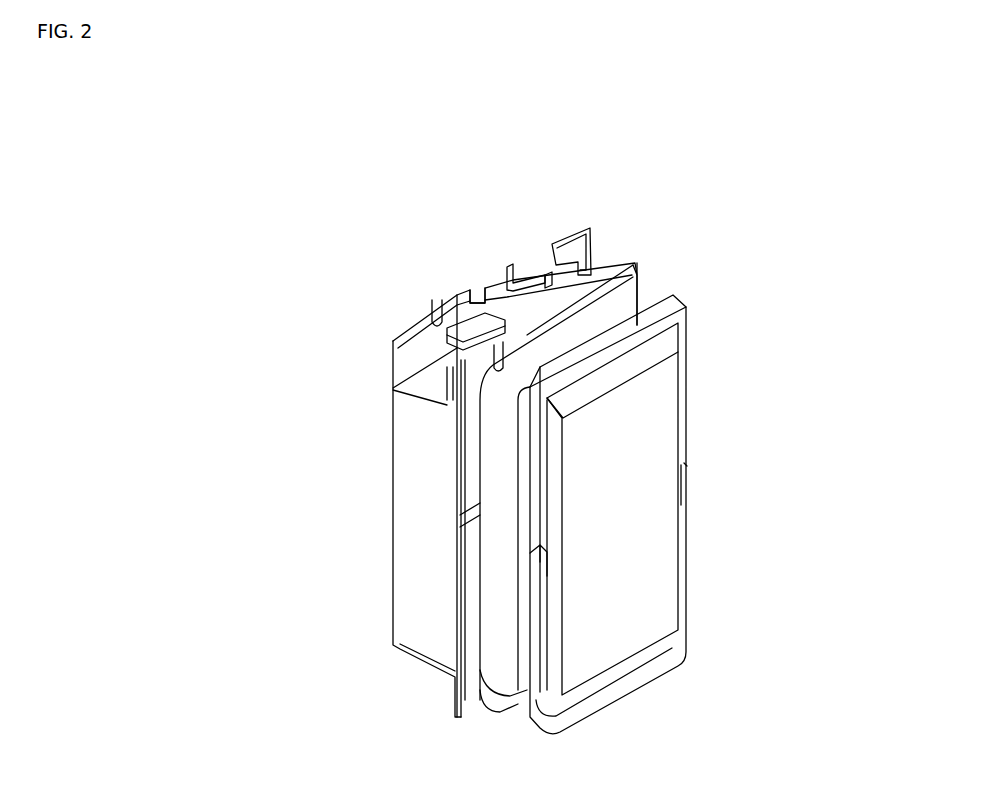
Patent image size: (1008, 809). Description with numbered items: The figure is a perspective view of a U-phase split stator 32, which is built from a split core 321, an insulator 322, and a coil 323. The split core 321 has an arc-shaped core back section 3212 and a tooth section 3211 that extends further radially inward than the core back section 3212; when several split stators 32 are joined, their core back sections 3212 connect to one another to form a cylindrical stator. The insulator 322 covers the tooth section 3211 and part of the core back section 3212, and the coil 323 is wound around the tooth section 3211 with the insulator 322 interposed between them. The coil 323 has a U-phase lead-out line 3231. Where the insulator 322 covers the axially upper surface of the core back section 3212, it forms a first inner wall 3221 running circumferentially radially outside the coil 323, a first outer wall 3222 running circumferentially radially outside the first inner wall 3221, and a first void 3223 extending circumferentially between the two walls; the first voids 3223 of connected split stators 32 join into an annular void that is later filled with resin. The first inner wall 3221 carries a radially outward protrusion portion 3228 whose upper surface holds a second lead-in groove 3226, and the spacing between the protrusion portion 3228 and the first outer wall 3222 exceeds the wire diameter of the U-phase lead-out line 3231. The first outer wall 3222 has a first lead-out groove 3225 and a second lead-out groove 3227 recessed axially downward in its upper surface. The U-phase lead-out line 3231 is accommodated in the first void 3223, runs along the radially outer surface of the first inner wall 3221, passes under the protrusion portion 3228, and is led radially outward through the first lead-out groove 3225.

The split stator 32 is at (213, 263).
The split core 321 is at (377, 512).
The tooth section 3211 is at (636, 583).
The core back section 3212 is at (416, 629).
The insulator 322 is at (690, 328).
The first inner wall 3221 is at (640, 267).
The first outer wall 3222 is at (590, 237).
The first void 3223 is at (410, 356).
The first lead-out groove 3225 is at (505, 283).
The second lead-in groove 3226 is at (468, 298).
The second lead-out groove 3227 is at (433, 318).
The protrusion portion 3228 is at (393, 390).
The coil 323 is at (636, 299).
The U-phase lead-out line 3231 is at (548, 284).